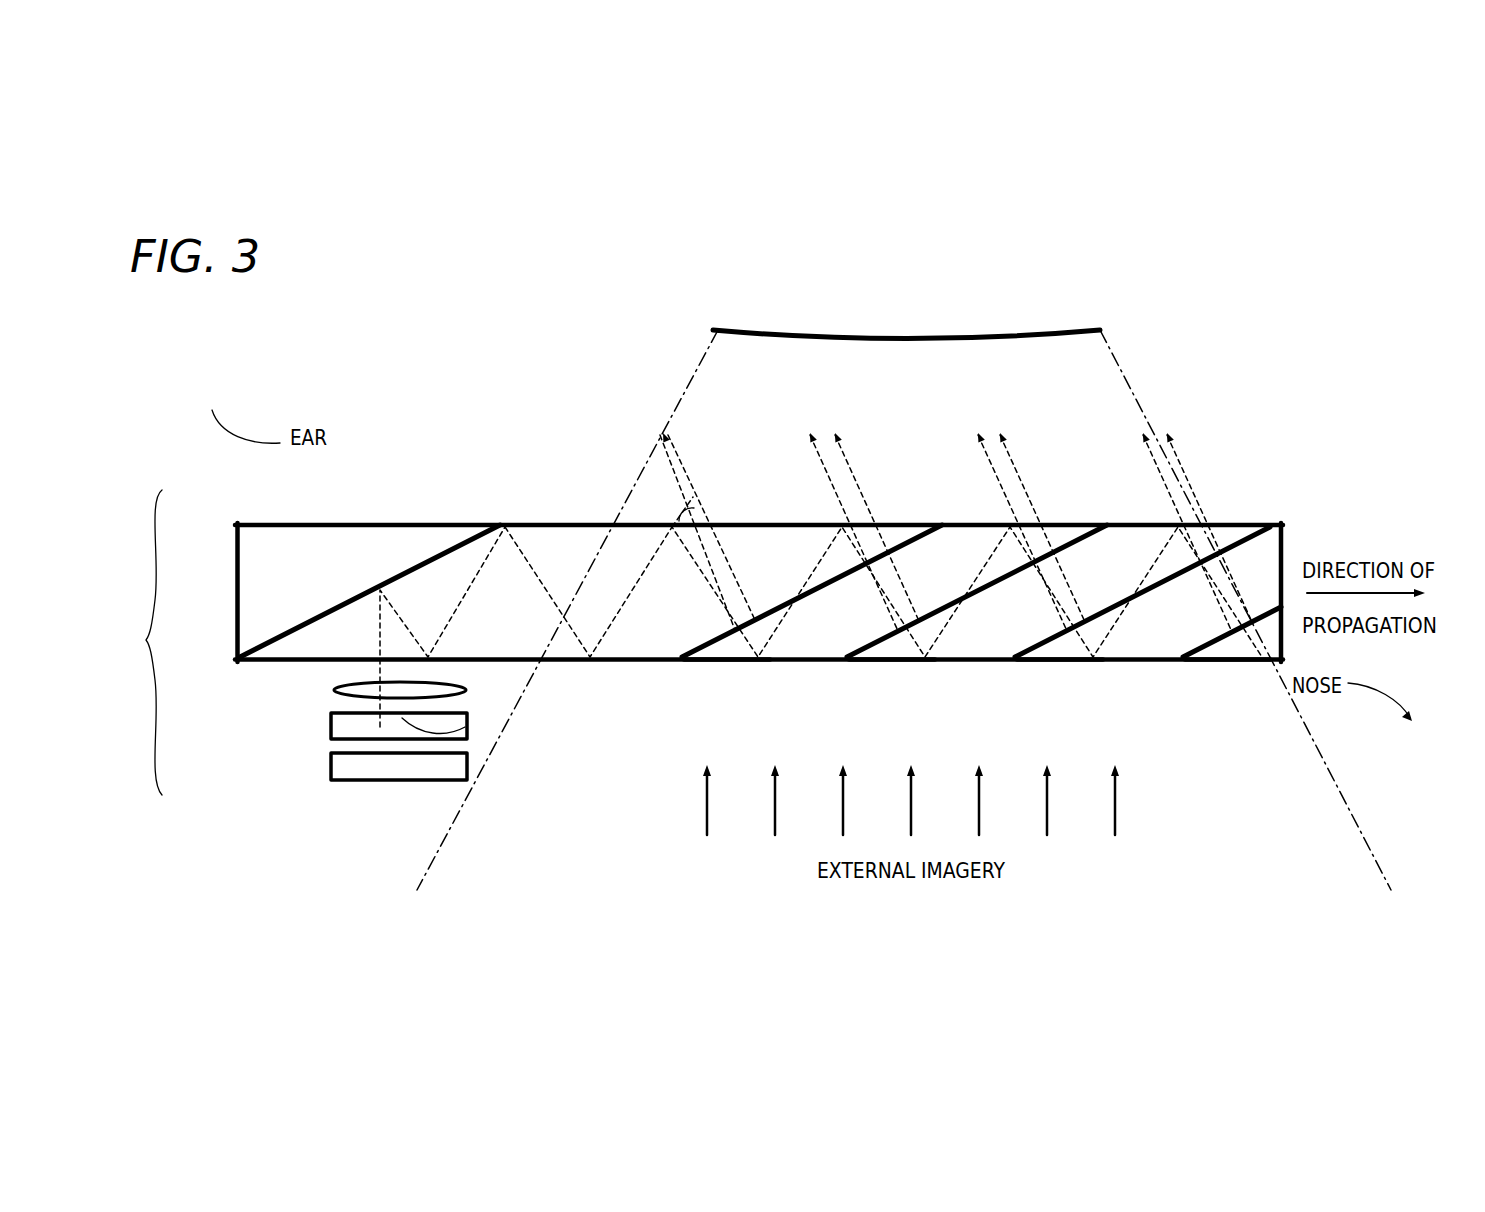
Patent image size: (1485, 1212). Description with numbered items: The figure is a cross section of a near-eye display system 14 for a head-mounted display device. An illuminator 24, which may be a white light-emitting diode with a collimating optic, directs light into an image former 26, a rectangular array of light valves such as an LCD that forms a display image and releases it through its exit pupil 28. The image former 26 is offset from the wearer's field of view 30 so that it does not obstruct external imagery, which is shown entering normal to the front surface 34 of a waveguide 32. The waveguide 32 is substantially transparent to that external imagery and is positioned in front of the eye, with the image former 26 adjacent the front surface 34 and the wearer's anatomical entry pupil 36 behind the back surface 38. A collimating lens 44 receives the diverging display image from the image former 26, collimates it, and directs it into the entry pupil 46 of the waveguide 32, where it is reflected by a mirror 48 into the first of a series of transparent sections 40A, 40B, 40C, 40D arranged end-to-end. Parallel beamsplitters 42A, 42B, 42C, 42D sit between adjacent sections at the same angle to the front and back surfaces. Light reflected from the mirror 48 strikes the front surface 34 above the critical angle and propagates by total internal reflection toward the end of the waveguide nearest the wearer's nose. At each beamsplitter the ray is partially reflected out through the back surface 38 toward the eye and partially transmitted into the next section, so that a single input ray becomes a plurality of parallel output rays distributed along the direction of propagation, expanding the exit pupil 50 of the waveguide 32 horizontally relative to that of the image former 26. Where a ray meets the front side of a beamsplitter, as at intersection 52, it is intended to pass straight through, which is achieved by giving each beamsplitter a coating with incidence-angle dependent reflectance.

The near-eye display system 14 is at (145, 642).
The illuminator 24 is at (330, 766).
The image former 26 is at (330, 728).
The exit pupil 28 is at (465, 727).
The field of view 30 is at (450, 838).
The waveguide 32 is at (1310, 496).
The front surface 34 is at (563, 676).
The anatomical entry pupil 36 is at (1012, 340).
The back surface 38 is at (530, 497).
The transparent section 40A is at (671, 651).
The transparent section 40B is at (831, 651).
The transparent section 40C is at (1001, 651).
The transparent section 40D is at (1168, 651).
The beamsplitter 42A is at (715, 650).
The beamsplitter 42B is at (882, 650).
The beamsplitter 42C is at (1050, 650).
The beamsplitter 42D is at (1218, 650).
The collimating lens 44 is at (335, 690).
The entry pupil 46 is at (361, 648).
The mirror 48 is at (312, 618).
The exit pupil 50 is at (930, 510).
The intersection 52 is at (800, 591).